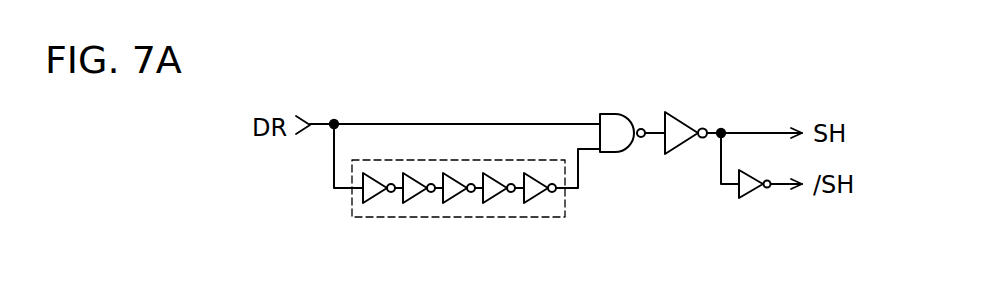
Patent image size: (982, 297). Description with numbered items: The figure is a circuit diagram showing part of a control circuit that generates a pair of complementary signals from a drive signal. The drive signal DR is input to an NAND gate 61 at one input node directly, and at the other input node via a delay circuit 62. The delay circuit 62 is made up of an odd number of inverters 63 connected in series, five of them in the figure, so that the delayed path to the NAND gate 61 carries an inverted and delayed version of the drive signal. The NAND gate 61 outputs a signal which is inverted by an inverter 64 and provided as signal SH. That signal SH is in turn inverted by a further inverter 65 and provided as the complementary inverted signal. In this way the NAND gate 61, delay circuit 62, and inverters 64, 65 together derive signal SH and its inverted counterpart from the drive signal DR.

The NAND gate 61 is at (615, 113).
The delay circuit 62 is at (349, 212).
The inverter 63 is at (398, 193).
The inverter 64 is at (683, 118).
The inverter 65 is at (748, 197).